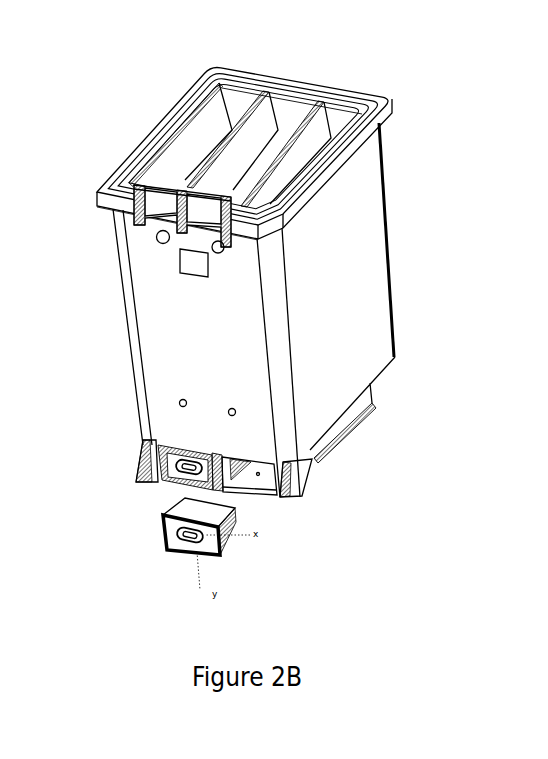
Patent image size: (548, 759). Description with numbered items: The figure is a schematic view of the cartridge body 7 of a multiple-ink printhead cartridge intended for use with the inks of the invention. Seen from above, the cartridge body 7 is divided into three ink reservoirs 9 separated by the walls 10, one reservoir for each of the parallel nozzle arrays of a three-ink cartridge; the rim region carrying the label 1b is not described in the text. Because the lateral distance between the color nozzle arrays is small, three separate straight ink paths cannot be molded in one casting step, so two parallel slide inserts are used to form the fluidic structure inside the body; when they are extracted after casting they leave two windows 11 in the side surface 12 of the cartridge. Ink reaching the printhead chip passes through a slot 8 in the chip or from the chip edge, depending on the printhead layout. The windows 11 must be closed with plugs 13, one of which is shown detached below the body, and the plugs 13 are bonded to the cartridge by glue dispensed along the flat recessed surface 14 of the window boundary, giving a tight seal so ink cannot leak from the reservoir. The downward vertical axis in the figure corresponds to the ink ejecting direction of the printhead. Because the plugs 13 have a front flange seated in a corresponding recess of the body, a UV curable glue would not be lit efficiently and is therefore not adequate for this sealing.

The container rim 1b is at (205, 73).
The ink reservoirs 9 is at (340, 116).
The slot 8 is at (152, 142).
The walls 10 is at (295, 113).
The cartridge body 7 is at (372, 243).
The side surface 12 is at (160, 343).
The flat recessed surface 14 is at (250, 497).
The plugs 13 is at (170, 436).
The windows 11 is at (262, 473).